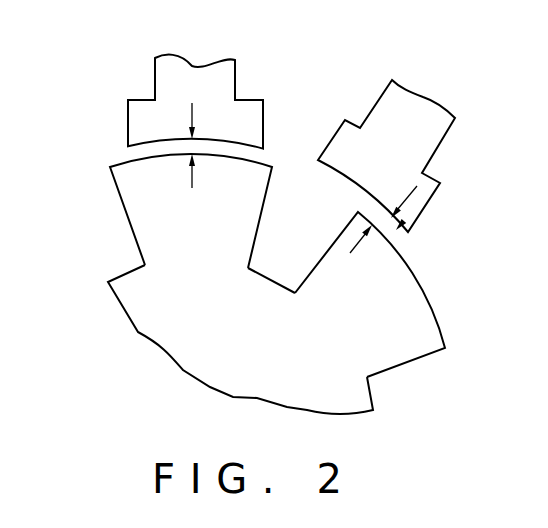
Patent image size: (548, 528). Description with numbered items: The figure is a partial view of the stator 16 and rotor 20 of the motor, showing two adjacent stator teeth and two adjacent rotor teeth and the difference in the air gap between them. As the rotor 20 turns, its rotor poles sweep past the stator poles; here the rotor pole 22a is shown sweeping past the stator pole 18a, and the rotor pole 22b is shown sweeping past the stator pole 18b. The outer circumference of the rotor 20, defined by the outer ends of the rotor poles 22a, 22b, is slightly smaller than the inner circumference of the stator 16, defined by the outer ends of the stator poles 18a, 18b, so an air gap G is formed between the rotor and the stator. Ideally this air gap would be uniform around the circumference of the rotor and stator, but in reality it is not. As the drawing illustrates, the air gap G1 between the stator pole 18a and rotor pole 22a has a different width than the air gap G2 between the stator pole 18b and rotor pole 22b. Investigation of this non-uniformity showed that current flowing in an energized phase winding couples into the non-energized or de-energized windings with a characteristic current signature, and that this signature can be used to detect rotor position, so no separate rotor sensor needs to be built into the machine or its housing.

The stator 16 is at (410, 60).
The stator pole 18a is at (128, 123).
The stator pole 18b is at (426, 207).
The rotor 20 is at (261, 352).
The rotor pole 22a is at (128, 217).
The rotor pole 22b is at (410, 360).
The air gap G1 is at (212, 145).
The air gap G2 is at (383, 211).
The air gap G is at (402, 237).